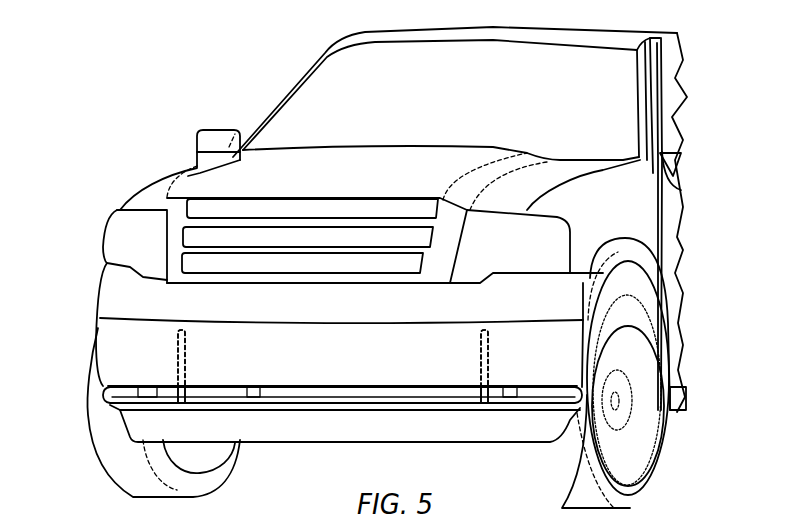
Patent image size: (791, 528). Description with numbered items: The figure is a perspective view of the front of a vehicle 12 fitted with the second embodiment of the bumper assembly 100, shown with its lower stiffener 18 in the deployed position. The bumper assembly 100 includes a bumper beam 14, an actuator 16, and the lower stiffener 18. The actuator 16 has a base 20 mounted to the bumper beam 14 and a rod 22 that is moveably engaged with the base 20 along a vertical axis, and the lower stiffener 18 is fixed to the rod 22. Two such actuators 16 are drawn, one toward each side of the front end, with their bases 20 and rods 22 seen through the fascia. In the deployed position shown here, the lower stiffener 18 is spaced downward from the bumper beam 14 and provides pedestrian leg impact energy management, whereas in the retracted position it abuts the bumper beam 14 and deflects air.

The vehicle 12 is at (292, 68).
The bumper beam 14 is at (92, 328).
The actuator 16 is at (196, 351).
The lower stiffener 18 is at (290, 432).
The base 20 is at (177, 340).
The rod 22 is at (177, 377).
The bumper assembly 100 is at (80, 322).